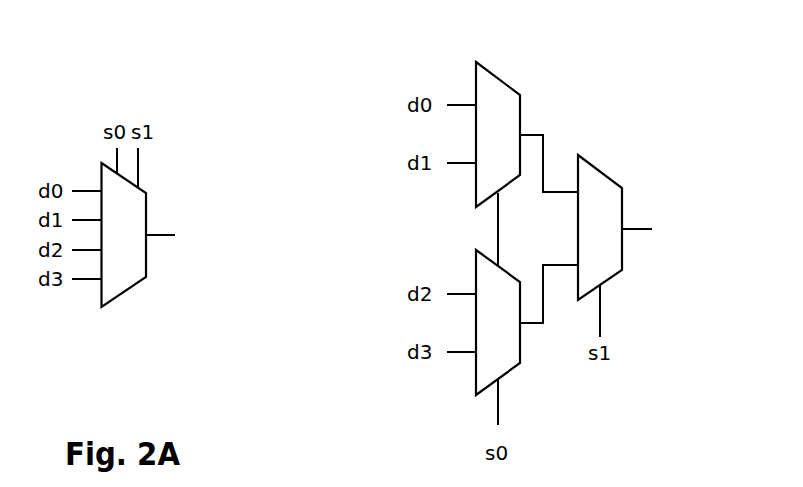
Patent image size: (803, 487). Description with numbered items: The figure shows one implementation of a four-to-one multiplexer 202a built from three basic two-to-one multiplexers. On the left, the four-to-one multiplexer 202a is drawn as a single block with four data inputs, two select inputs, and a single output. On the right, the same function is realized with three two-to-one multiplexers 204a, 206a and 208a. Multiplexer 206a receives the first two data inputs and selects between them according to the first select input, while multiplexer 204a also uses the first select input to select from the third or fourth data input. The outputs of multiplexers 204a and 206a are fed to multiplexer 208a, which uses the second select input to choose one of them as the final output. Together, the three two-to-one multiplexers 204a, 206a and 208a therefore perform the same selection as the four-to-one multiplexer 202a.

The 4:1 multiplexer 202a is at (147, 210).
The 2:1 multiplexer 204a is at (519, 364).
The 2:1 multiplexer 206a is at (500, 73).
The 2:1 multiplexer 208a is at (600, 167).